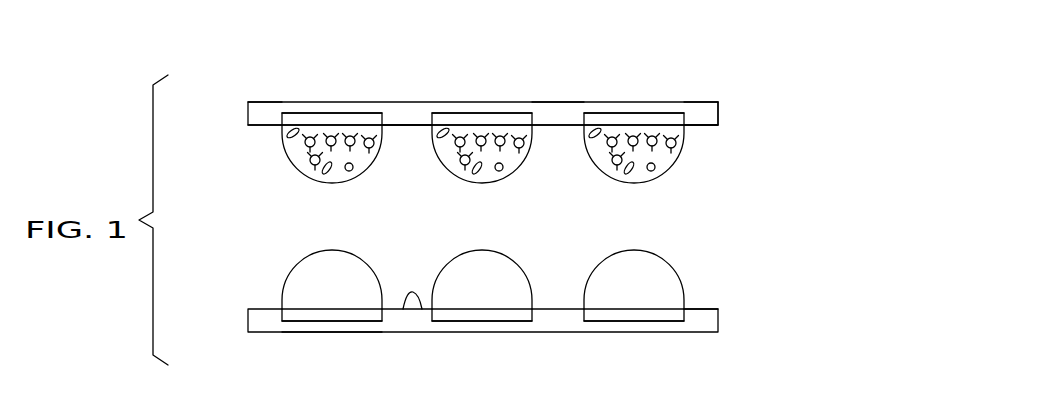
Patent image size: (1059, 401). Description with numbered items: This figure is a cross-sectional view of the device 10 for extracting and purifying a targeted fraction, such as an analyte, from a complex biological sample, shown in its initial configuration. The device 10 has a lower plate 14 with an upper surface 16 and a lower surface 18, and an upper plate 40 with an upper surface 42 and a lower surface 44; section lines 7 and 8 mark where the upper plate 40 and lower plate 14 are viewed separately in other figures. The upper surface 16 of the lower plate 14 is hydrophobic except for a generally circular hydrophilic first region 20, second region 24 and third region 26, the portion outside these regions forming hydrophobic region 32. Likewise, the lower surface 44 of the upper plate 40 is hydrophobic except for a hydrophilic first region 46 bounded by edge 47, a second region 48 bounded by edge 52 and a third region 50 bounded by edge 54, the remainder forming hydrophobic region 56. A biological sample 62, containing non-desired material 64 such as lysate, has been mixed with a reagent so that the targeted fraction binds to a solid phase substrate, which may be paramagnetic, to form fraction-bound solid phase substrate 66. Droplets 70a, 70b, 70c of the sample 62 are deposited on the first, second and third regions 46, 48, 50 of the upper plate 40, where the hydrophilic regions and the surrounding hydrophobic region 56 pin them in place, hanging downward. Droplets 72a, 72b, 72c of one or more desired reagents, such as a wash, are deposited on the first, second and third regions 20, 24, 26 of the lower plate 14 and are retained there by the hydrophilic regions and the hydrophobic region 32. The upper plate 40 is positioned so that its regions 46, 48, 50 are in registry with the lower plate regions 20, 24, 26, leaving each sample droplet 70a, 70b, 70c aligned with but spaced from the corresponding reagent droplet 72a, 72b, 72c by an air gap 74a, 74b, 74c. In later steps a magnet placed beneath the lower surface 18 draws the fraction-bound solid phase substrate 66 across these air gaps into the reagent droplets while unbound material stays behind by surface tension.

The section line 7- 7 is at (197, 248).
The section line 8- 8 is at (197, 188).
The device 10 is at (178, 65).
The lower plate 14 is at (715, 340).
The upper surface 16 is at (702, 308).
The lower surface 18 is at (320, 333).
The first region 20 is at (355, 330).
The second region 24 is at (505, 330).
The third region 26 is at (622, 330).
The hydrophobic region 32 is at (422, 309).
The upper plate 40 is at (389, 94).
The upper surface 42 is at (703, 125).
The lower surface 44 is at (706, 124).
The first region 46 is at (300, 105).
The edge 47 is at (280, 112).
The second region 48 is at (454, 105).
The third region 50 is at (587, 105).
The edge 52 is at (538, 116).
The edge 54 is at (692, 124).
The hydrophobic region 56 is at (397, 126).
The biological sample 62 is at (290, 158).
The non-desired material 64 is at (351, 162).
The fraction-bound solid phase substrate 66 is at (328, 137).
The droplet 70a is at (356, 178).
The droplet 70b is at (506, 178).
The droplet 70c is at (660, 178).
The droplet 72a is at (302, 262).
The droplet 72b is at (452, 262).
The droplet 72c is at (605, 262).
The air gap 74a is at (348, 231).
The air gap 74b is at (500, 231).
The air gap 74c is at (652, 231).